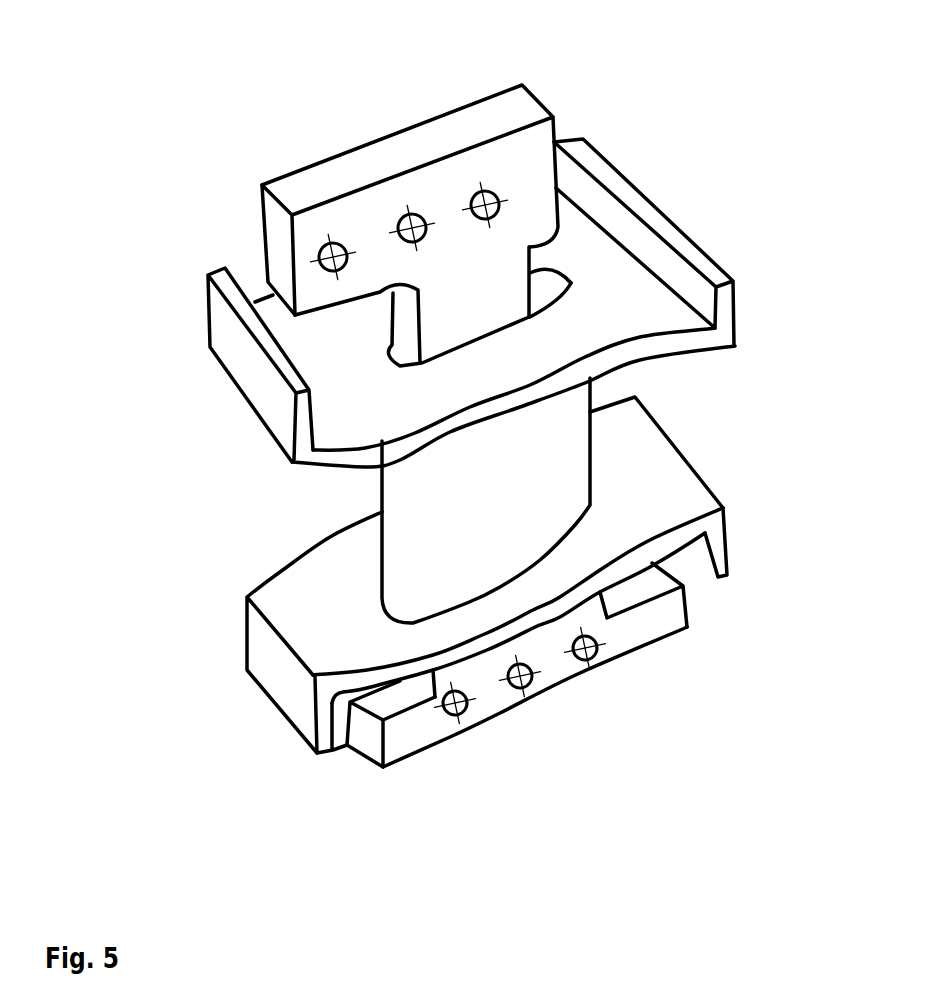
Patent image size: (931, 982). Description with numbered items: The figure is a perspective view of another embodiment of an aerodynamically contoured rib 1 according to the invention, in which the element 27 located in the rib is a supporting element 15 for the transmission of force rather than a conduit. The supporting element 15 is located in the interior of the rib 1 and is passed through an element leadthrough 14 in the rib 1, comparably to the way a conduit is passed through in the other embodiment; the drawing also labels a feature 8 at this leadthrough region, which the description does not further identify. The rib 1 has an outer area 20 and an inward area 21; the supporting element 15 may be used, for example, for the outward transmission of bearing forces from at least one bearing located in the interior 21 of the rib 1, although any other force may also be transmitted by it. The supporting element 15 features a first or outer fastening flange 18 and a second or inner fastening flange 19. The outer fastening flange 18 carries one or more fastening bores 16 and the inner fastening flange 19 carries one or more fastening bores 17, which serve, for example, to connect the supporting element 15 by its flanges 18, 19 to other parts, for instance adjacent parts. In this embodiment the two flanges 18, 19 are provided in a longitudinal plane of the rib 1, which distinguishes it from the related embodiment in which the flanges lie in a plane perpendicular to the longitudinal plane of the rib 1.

The rib 1 is at (621, 177).
The hole 8 is at (544, 285).
The element leadthrough 14 is at (585, 289).
The supporting element for the transmission of force 15 is at (539, 177).
The fastening bore 16 is at (324, 234).
The fastening bore 17 is at (446, 726).
The fastening flange 18 is at (316, 295).
The fastening flange 19 is at (362, 735).
The outer area 20 is at (331, 28).
The inward area 21 is at (489, 816).
The element 27 is at (259, 221).